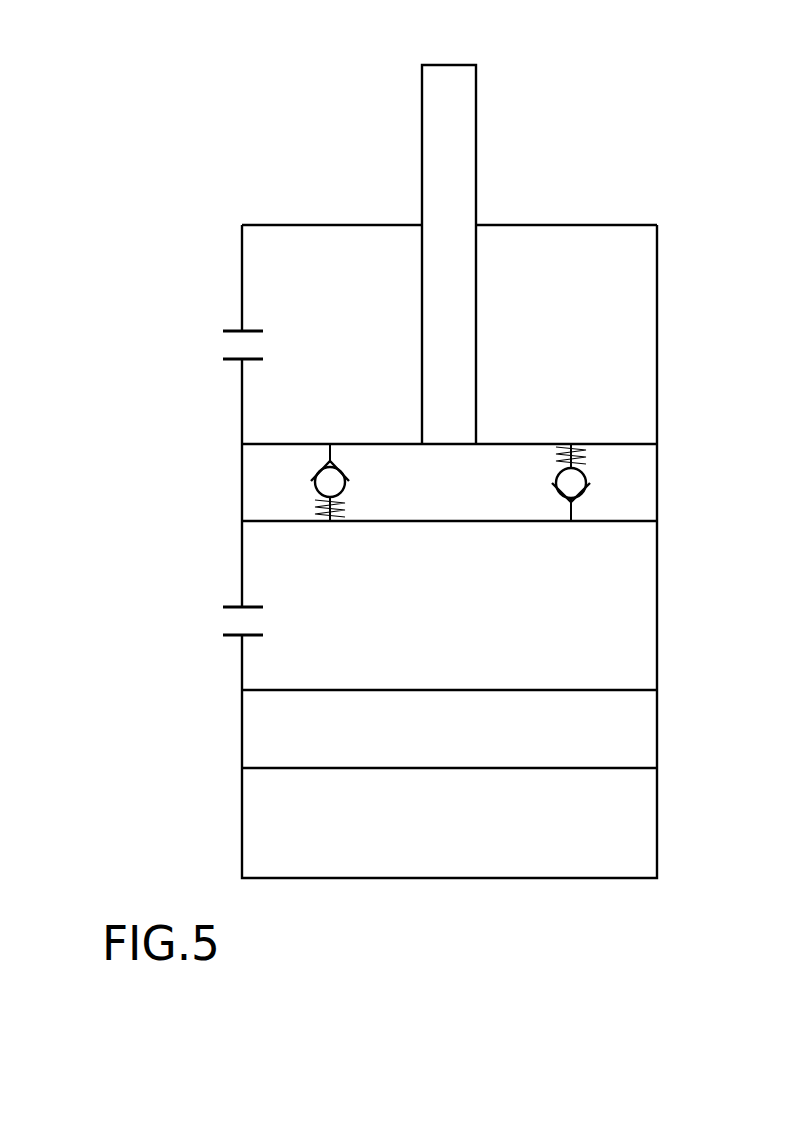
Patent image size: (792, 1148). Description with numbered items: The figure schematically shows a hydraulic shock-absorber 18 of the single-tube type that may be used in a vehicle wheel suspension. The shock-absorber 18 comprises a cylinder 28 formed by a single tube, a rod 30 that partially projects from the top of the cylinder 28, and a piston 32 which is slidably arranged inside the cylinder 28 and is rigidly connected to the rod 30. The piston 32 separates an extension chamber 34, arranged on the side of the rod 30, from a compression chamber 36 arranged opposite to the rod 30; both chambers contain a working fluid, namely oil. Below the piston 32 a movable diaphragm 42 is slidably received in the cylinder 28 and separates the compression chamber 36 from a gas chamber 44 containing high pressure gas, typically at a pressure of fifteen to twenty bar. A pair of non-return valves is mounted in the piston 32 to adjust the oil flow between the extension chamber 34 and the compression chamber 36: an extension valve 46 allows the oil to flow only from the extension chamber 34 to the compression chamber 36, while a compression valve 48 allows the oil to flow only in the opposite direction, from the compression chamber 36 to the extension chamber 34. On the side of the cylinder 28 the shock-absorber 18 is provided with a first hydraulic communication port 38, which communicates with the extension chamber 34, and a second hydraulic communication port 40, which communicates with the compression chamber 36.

The shock-absorber 18 is at (198, 431).
The cylinder 28 is at (666, 326).
The rod 30 is at (476, 93).
The piston 32 is at (640, 475).
The extension chamber 34 is at (578, 262).
The compression chamber 36 is at (627, 592).
The first hydraulic communication port 38 is at (222, 331).
The second hydraulic communication port 40 is at (228, 623).
The movable diaphragm 42 is at (633, 732).
The gas chamber 44 is at (637, 832).
The extension valve 46 is at (318, 468).
The compression valve 48 is at (586, 497).